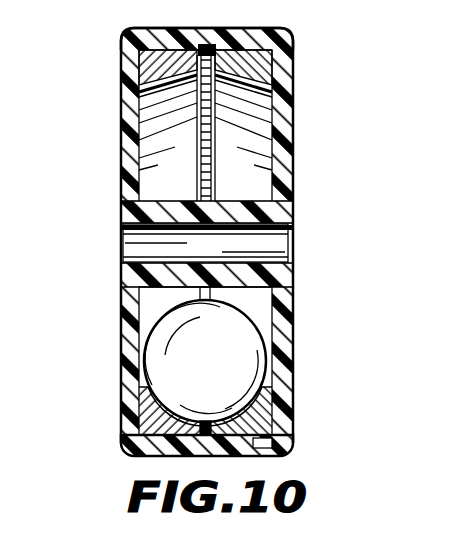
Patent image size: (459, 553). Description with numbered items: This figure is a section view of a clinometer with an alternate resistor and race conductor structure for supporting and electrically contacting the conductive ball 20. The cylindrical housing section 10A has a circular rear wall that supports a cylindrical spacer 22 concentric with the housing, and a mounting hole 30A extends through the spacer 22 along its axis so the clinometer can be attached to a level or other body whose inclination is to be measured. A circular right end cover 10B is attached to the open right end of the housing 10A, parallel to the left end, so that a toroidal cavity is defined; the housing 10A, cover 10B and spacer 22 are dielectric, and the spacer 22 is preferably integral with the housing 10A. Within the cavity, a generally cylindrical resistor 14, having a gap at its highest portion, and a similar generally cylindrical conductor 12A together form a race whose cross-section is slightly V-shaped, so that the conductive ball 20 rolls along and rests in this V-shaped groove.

The cylindrical housing section 10A is at (162, 34).
The circular right end cover 10B is at (292, 49).
The cylindrical spacer 22 is at (228, 213).
The mounting hole 30A is at (280, 244).
The conductive ball 20 is at (214, 366).
The generally cylindrical resistor 14 is at (137, 424).
The generally cylindrical conductor 12A is at (275, 422).